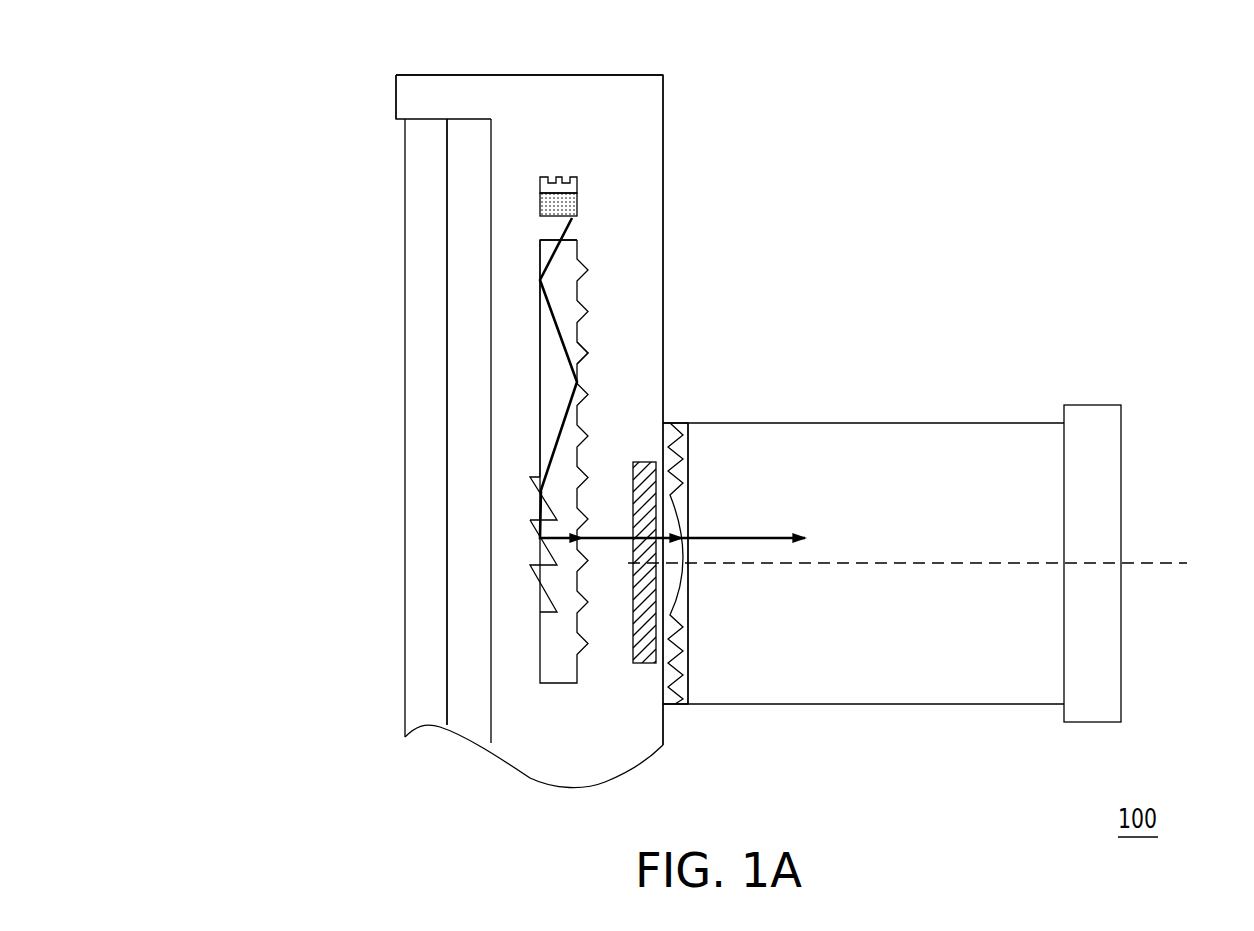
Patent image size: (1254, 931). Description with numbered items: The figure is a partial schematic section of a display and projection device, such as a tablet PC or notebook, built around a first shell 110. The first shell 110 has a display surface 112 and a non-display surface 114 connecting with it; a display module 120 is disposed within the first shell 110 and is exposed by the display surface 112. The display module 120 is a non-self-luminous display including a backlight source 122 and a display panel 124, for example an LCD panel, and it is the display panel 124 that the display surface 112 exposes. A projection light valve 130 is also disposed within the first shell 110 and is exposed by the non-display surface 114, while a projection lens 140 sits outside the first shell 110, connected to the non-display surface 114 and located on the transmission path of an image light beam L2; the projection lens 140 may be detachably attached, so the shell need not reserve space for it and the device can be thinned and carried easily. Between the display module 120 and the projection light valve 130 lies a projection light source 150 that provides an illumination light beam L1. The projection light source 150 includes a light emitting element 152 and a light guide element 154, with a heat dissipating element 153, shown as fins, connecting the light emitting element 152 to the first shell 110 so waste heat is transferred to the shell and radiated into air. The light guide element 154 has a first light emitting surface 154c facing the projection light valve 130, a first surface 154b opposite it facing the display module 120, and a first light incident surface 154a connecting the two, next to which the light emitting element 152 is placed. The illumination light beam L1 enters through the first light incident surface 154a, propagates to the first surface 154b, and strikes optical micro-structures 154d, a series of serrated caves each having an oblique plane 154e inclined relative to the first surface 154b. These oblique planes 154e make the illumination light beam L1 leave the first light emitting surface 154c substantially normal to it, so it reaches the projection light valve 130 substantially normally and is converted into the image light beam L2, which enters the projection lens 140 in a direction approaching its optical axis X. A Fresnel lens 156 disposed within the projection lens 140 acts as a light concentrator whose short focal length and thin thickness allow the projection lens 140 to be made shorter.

The first shell 110 is at (617, 75).
The display surface 112 is at (385, 98).
The non-display surface 114 is at (549, 62).
The display module 120 is at (372, 431).
The backlight source 122 is at (458, 176).
The display panel 124 is at (418, 142).
The projection light valve 130 is at (644, 473).
The projection lens 140 is at (915, 409).
The projection light source 150 is at (534, 386).
The light emitting element 152 is at (577, 210).
The heat dissipating element 153 is at (577, 185).
The light guide element 154 is at (520, 437).
The first light incident surface 154a is at (539, 232).
The first surface 154b is at (529, 437).
The first light emitting surface 154c is at (590, 328).
The optical micro-structures 154d is at (518, 492).
The oblique plane 154e is at (529, 596).
The Fresnel lens 156 is at (663, 693).
The illumination light beam L1 is at (541, 258).
The image light beam L2 is at (673, 492).
The optical axis X is at (1170, 568).